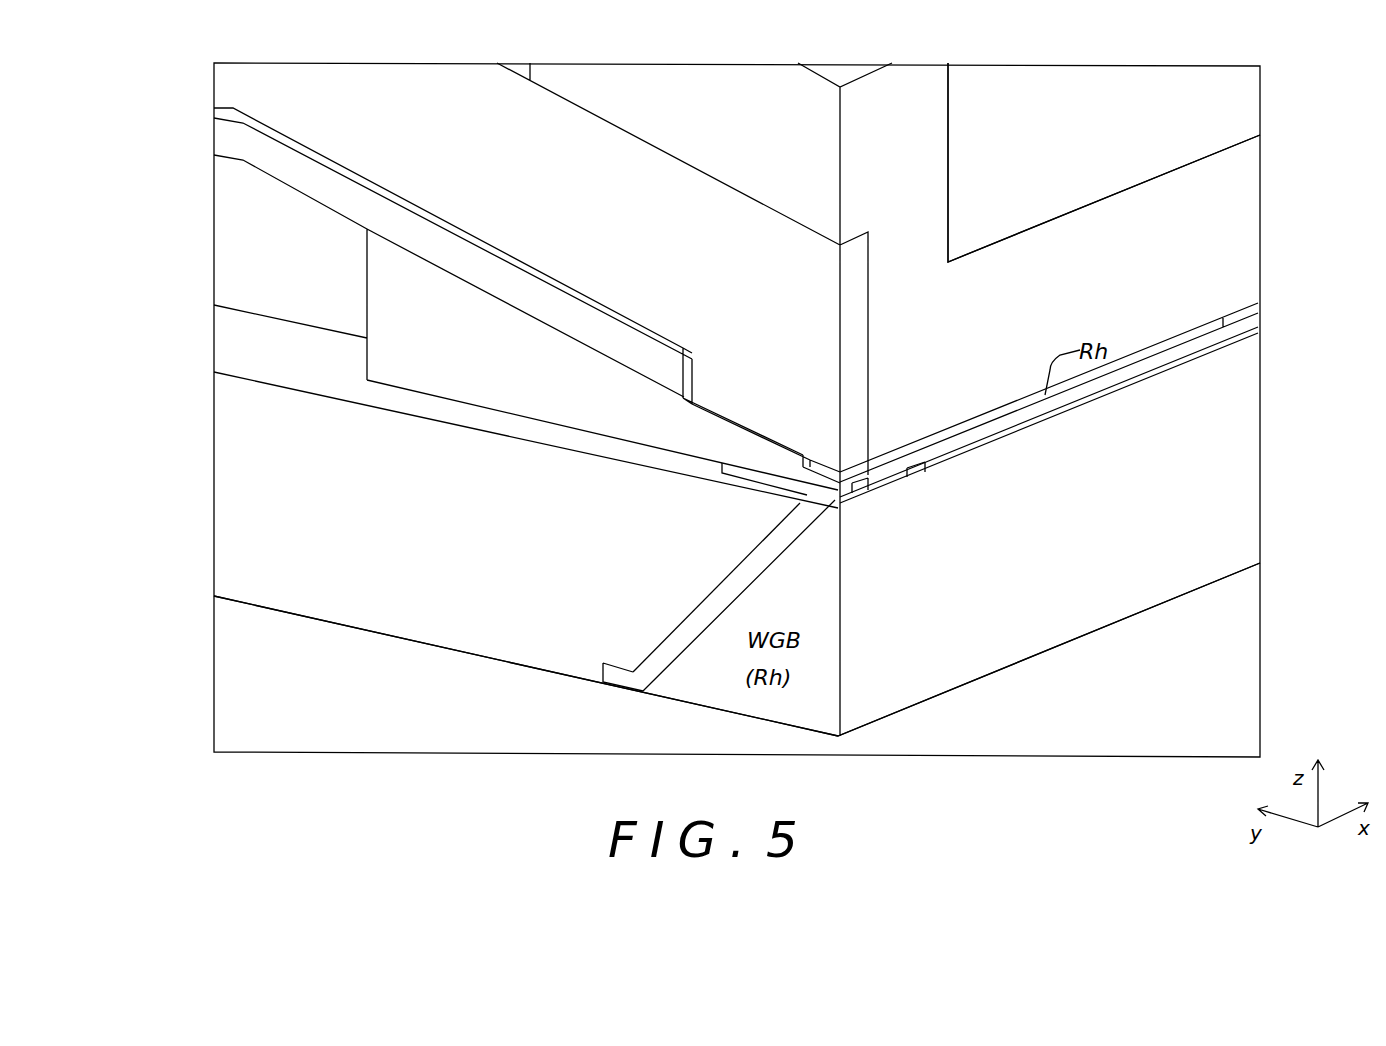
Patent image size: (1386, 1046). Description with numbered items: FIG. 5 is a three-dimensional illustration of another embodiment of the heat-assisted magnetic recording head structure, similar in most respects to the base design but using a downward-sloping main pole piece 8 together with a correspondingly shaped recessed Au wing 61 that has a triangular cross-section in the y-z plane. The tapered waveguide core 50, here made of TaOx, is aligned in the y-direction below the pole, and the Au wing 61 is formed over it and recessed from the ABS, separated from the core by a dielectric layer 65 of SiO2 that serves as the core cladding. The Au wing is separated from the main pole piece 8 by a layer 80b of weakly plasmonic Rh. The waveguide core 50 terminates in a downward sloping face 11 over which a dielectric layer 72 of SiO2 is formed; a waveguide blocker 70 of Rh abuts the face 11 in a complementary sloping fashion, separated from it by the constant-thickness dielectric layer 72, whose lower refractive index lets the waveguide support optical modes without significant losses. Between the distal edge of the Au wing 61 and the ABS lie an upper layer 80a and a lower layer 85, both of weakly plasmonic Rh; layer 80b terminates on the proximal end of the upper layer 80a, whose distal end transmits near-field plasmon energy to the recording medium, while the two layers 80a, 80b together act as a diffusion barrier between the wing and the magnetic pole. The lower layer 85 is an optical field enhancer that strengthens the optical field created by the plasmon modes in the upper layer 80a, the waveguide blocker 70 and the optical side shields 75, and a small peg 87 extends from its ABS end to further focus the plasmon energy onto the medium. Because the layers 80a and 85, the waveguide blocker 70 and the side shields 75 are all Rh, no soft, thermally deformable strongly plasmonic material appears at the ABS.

The downward-sloping main pole piece 8 is at (805, 393).
The downward sloping face 11 is at (683, 617).
The waveguide core 50 is at (233, 486).
The recessed Au wing 61 is at (380, 307).
The dielectric layer 65 is at (532, 429).
The waveguide blocker 70 is at (1232, 385).
The dielectric layer 72 is at (673, 647).
The optical side shield 75 is at (897, 472).
The upper layer 80a is at (872, 465).
The layer of weakly plasmonic material 80b is at (233, 110).
The lower layer 85 is at (800, 490).
The peg 87 is at (847, 492).